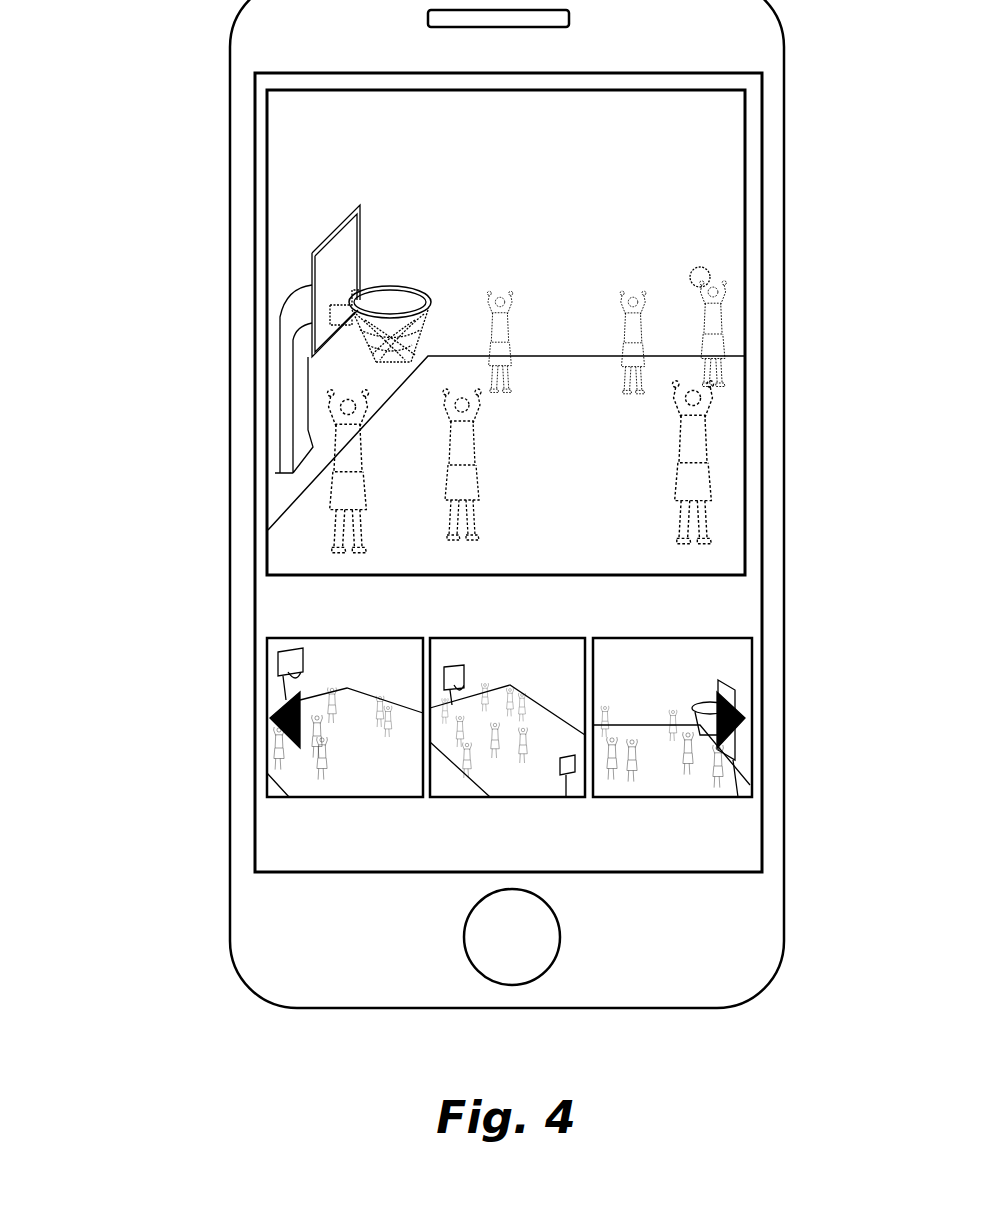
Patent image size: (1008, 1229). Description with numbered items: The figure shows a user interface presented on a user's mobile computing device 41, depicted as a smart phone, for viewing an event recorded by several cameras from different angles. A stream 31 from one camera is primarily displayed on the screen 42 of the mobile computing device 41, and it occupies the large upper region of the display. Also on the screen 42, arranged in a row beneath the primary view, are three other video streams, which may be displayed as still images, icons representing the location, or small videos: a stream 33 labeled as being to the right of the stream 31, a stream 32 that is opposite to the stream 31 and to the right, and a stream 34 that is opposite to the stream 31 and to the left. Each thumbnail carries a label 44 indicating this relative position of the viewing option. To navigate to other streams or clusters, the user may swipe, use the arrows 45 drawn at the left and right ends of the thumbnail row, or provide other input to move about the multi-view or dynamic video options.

The stream 31 is at (288, 200).
The stream 32 is at (507, 783).
The stream 33 is at (292, 647).
The stream 34 is at (745, 764).
The mobile computing device 41 is at (240, 868).
The screen 42 is at (255, 560).
The viewpoint label 44 is at (682, 638).
The arrows 45 is at (270, 720).